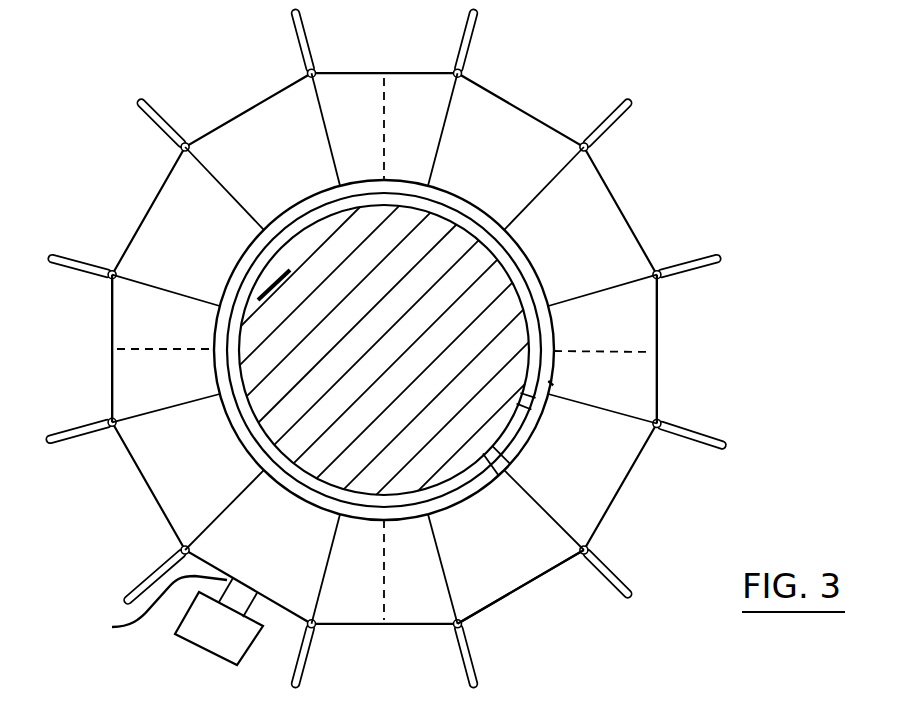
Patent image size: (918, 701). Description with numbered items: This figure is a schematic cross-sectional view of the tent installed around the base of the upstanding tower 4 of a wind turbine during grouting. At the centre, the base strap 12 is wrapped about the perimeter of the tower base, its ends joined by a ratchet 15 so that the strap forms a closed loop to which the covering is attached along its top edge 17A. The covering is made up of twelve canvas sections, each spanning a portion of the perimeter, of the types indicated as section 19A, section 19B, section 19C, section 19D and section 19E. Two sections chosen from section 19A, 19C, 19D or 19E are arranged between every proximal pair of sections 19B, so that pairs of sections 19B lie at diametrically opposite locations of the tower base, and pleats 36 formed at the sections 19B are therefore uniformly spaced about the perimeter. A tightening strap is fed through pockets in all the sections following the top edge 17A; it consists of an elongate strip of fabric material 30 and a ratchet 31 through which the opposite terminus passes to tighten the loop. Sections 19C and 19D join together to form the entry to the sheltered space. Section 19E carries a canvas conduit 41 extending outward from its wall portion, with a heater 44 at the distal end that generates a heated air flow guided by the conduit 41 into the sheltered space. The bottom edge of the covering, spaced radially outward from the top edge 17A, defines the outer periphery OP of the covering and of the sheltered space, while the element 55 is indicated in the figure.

The tower 4 is at (503, 320).
The base strap 12 is at (478, 236).
The ratchet 15 is at (527, 403).
The top edge 17A is at (553, 383).
The covering section 19A is at (283, 175).
The covering section 19B is at (398, 140).
The covering section 19C is at (595, 475).
The covering section 19D is at (505, 560).
The covering section 19E is at (275, 555).
The strip of fabric material 30 is at (513, 450).
The ratchet 31 is at (495, 470).
The pleat 36 is at (133, 347).
The conduit 41 is at (154, 608).
The heater 44 is at (192, 642).
The edge 55 is at (475, 589).
The outer periphery OP is at (661, 312).